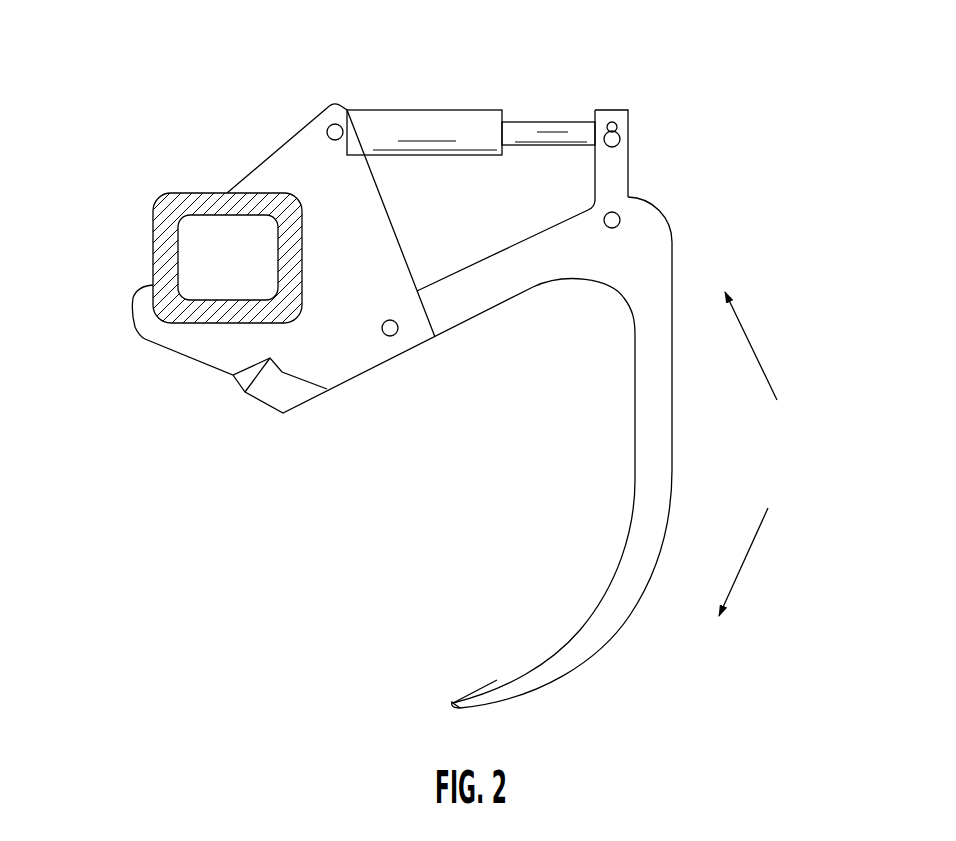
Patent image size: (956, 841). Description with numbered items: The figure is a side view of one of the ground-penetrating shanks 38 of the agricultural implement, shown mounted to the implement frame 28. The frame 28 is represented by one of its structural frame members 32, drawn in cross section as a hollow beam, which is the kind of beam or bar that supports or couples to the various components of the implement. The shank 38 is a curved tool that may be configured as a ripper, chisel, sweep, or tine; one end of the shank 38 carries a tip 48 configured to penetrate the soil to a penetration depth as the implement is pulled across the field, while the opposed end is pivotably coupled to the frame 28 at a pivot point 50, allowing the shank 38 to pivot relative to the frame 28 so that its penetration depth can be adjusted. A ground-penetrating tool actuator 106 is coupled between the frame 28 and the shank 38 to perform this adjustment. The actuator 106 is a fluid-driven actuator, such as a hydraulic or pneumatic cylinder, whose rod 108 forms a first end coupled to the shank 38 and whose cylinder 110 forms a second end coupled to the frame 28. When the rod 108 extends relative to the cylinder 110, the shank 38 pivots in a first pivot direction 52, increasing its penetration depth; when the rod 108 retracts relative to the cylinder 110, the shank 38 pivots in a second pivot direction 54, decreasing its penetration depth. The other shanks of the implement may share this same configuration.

The frame 28 is at (128, 250).
The structural frame member 32 is at (205, 192).
The shank 38 is at (631, 478).
The tip 48 is at (450, 703).
The pivot point 50 is at (396, 337).
The first pivot direction 52 is at (740, 573).
The second pivot direction 54 is at (753, 342).
The ground-penetrating tool actuator 106 is at (476, 105).
The rod 108 is at (542, 121).
The cylinder 110 is at (417, 151).